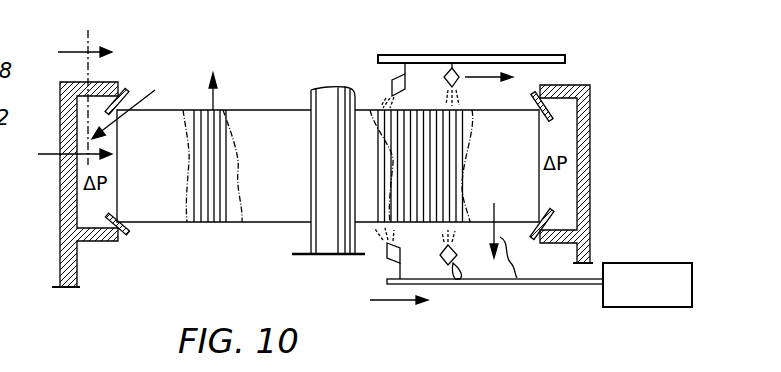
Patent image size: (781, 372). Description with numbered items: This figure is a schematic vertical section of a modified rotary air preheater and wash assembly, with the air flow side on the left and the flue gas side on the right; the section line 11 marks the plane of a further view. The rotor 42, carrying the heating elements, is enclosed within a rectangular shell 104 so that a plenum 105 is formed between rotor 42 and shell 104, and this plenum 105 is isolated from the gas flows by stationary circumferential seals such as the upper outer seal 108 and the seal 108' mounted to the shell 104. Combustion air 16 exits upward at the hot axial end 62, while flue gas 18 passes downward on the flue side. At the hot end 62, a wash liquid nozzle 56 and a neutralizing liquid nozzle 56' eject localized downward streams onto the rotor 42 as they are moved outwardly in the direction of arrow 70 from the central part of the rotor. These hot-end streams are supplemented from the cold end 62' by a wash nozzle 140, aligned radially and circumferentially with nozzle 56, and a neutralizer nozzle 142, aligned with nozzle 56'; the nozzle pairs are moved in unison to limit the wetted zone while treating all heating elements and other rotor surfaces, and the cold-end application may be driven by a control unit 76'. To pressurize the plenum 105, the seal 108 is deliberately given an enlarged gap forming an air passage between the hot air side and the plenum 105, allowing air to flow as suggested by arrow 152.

The section line 11 is at (66, 97).
The combustion air flow 16 is at (213, 100).
The flue gas flow 18 is at (520, 293).
The rotor 42 is at (117, 193).
The wash liquid nozzle 56 is at (443, 66).
The neutralizing liquid nozzle 56' is at (366, 78).
The hot axial end 62 is at (446, 152).
The cold end 62' is at (226, 197).
The arrow 70 is at (483, 55).
The controller 76' is at (647, 267).
The shell 104 is at (589, 148).
The plenum 105 is at (88, 220).
The upper outer stationary circumferential seal 108 is at (133, 93).
The outer circumferential seal 108' is at (139, 244).
The wash liquid nozzle 140 is at (452, 287).
The neutralizer nozzle 142 is at (387, 258).
The arrow 152 is at (108, 125).